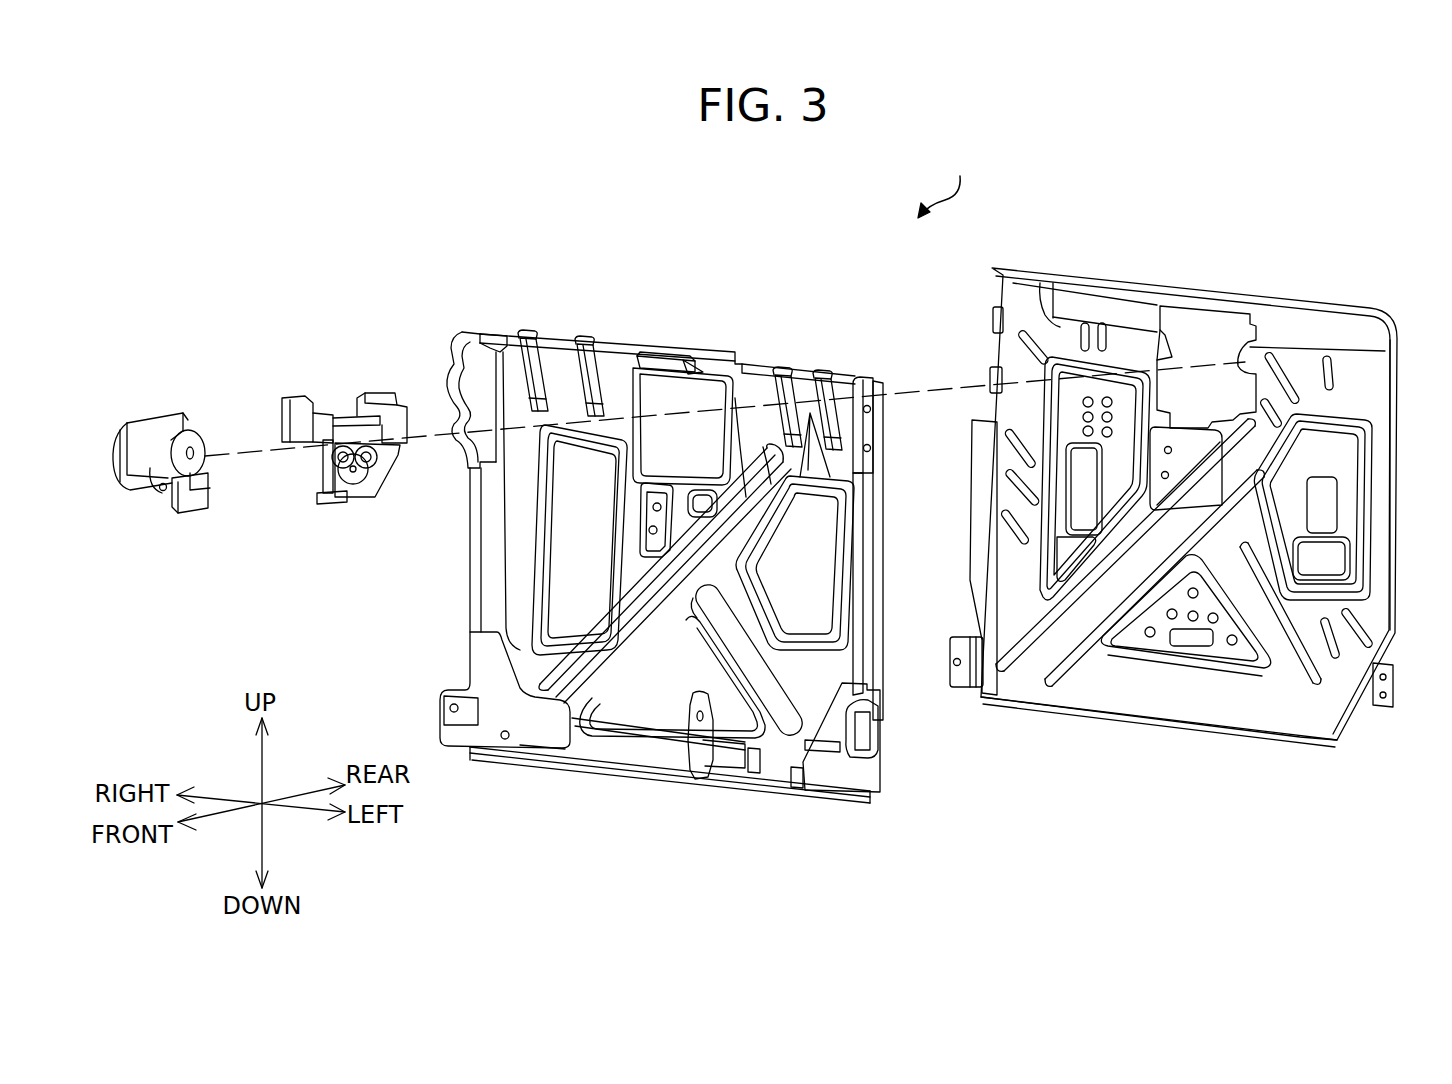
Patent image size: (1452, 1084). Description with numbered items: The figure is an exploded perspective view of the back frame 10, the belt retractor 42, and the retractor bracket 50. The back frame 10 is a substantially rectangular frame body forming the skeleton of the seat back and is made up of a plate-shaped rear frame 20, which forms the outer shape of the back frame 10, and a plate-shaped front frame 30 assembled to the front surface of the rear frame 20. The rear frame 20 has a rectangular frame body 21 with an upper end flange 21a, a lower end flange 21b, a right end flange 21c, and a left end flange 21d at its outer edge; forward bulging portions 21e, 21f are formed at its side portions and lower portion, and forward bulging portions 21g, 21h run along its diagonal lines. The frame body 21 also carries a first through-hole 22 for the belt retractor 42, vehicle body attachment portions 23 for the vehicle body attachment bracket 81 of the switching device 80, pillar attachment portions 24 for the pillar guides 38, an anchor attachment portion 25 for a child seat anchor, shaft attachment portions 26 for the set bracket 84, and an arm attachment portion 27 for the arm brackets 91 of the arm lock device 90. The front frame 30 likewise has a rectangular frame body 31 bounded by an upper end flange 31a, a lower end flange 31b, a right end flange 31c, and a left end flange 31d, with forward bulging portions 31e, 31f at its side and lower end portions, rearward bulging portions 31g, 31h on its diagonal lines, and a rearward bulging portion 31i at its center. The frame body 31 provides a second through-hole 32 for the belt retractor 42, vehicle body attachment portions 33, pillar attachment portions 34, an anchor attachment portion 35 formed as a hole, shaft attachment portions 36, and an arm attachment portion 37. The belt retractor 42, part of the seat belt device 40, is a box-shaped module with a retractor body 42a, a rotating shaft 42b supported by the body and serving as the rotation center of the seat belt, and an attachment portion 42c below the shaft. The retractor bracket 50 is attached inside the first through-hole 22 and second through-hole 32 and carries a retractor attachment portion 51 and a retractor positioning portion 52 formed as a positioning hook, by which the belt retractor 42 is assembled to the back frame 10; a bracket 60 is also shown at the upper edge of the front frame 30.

The back frame 10 is at (950, 180).
The rear frame 20 is at (1173, 512).
The frame body 21 is at (1173, 515).
The upper end flange 21a is at (1125, 283).
The lower end flange 21b is at (1112, 708).
The right end flange 21c is at (975, 467).
The left end flange 21d is at (1394, 480).
The forward bulging portion 21e is at (1048, 405).
The forward bulging portion 21f is at (1214, 672).
The forward bulging portion 21g is at (1045, 680).
The forward bulging portion 21h is at (1333, 665).
The first through-hole 22 is at (1248, 340).
The vehicle body attachment portion 23 is at (993, 318).
The pillar attachment portion 24 is at (1050, 330).
The anchor attachment portion 25 is at (1065, 522).
The shaft attachment portion 26 is at (955, 672).
The arm attachment portion 27 is at (1376, 705).
The front frame 30 is at (674, 565).
The frame body 31 is at (664, 555).
The upper end flange 31a is at (550, 346).
The lower end flange 31b is at (617, 768).
The right end flange 31c is at (472, 598).
The left end flange 31d is at (866, 577).
The forward bulging portion 31e is at (545, 502).
The forward bulging portion 31f is at (666, 758).
The rearward bulging portion 31g is at (583, 666).
The rearward bulging portion 31h is at (716, 614).
The rearward bulging portion 31i is at (658, 492).
The second through-hole 32 is at (706, 342).
The vehicle body attachment portion 33 is at (496, 352).
The pillar attachment portion 34 is at (540, 356).
The anchor attachment portion 35 is at (548, 522).
The shaft attachment portion 36 is at (540, 748).
The arm attachment portion 37 is at (755, 765).
The pillar guide 38 is at (573, 372).
The drive unit 40 is at (182, 455).
The belt retractor 42 is at (182, 455).
The retractor body 42a is at (132, 456).
The rotating shaft 42b is at (197, 455).
The attachment portion 42c is at (163, 490).
The retractor bracket 50 is at (355, 436).
The retractor attachment portion 51 is at (348, 493).
The retractor positioning portion 52 is at (375, 462).
The bracket 60 is at (645, 364).
The switching device 80 is at (439, 360).
The vehicle body attachment bracket 81 is at (463, 378).
The set bracket 84 is at (490, 665).
The arm lock device 90 is at (827, 798).
The arm bracket 91 is at (722, 772).